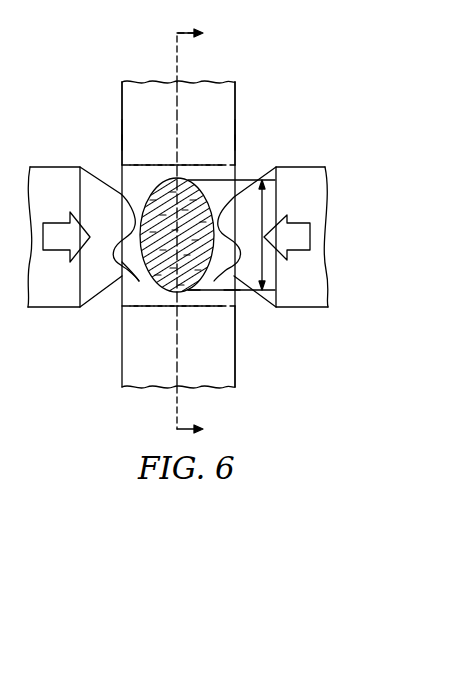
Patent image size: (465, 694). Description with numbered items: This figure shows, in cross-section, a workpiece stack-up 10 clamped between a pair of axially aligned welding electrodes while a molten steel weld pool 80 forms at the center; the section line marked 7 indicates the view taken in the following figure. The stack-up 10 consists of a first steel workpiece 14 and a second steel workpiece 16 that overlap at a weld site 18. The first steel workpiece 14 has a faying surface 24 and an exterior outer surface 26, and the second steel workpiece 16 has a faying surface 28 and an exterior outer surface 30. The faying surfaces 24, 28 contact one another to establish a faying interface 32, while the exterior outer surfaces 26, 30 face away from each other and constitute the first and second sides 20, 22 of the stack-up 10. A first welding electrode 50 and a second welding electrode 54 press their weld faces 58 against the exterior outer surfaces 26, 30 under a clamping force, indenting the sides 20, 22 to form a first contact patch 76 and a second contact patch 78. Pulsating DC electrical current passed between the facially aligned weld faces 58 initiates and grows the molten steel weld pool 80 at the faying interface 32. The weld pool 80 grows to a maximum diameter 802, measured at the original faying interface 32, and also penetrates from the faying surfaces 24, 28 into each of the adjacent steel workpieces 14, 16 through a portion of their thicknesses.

The section line for FIG. 7 is at (198, 233).
The workpiece stack-up 10 is at (119, 317).
The first steel workpiece 14 is at (221, 108).
The second steel workpiece 16 is at (138, 110).
The weld site 18 is at (207, 310).
The first side 20 is at (237, 129).
The second side 22 is at (120, 129).
The faying surface 24 is at (178, 116).
The exterior outer surface 26 is at (237, 142).
The faying surface 28 is at (177, 132).
The exterior outer surface 30 is at (121, 140).
The faying interface 32 is at (176, 318).
The first welding electrode 50 is at (302, 306).
The second welding electrode 54 is at (57, 306).
The weld faces 58 is at (112, 178).
The first contact patch 76 is at (214, 293).
The second contact patch 78 is at (140, 283).
The molten steel weld pool 80 is at (182, 257).
The maximum diameter 802 is at (278, 208).